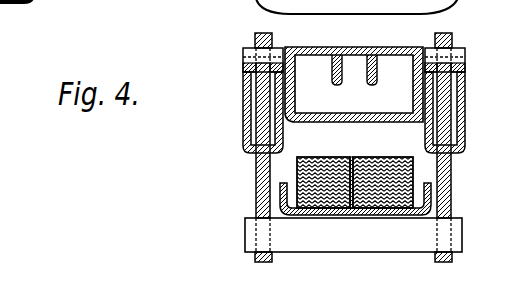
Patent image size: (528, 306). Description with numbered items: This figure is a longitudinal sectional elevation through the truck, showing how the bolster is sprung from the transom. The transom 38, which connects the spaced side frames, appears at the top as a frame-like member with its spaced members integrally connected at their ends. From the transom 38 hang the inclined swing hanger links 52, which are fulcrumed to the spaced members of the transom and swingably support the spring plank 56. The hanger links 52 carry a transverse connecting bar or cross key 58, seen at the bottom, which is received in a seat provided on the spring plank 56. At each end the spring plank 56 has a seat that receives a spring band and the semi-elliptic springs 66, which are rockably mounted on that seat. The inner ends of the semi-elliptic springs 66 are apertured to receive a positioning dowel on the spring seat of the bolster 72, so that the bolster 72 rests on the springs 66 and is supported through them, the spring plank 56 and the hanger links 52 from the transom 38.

The transom 38 is at (245, 81).
The inclined swing hanger links 52 is at (257, 106).
The spring plank 56 is at (432, 184).
The transverse connecting bar or cross key 58 is at (376, 252).
The semi-elliptic springs 66 is at (366, 164).
The bolster 72 is at (362, 38).